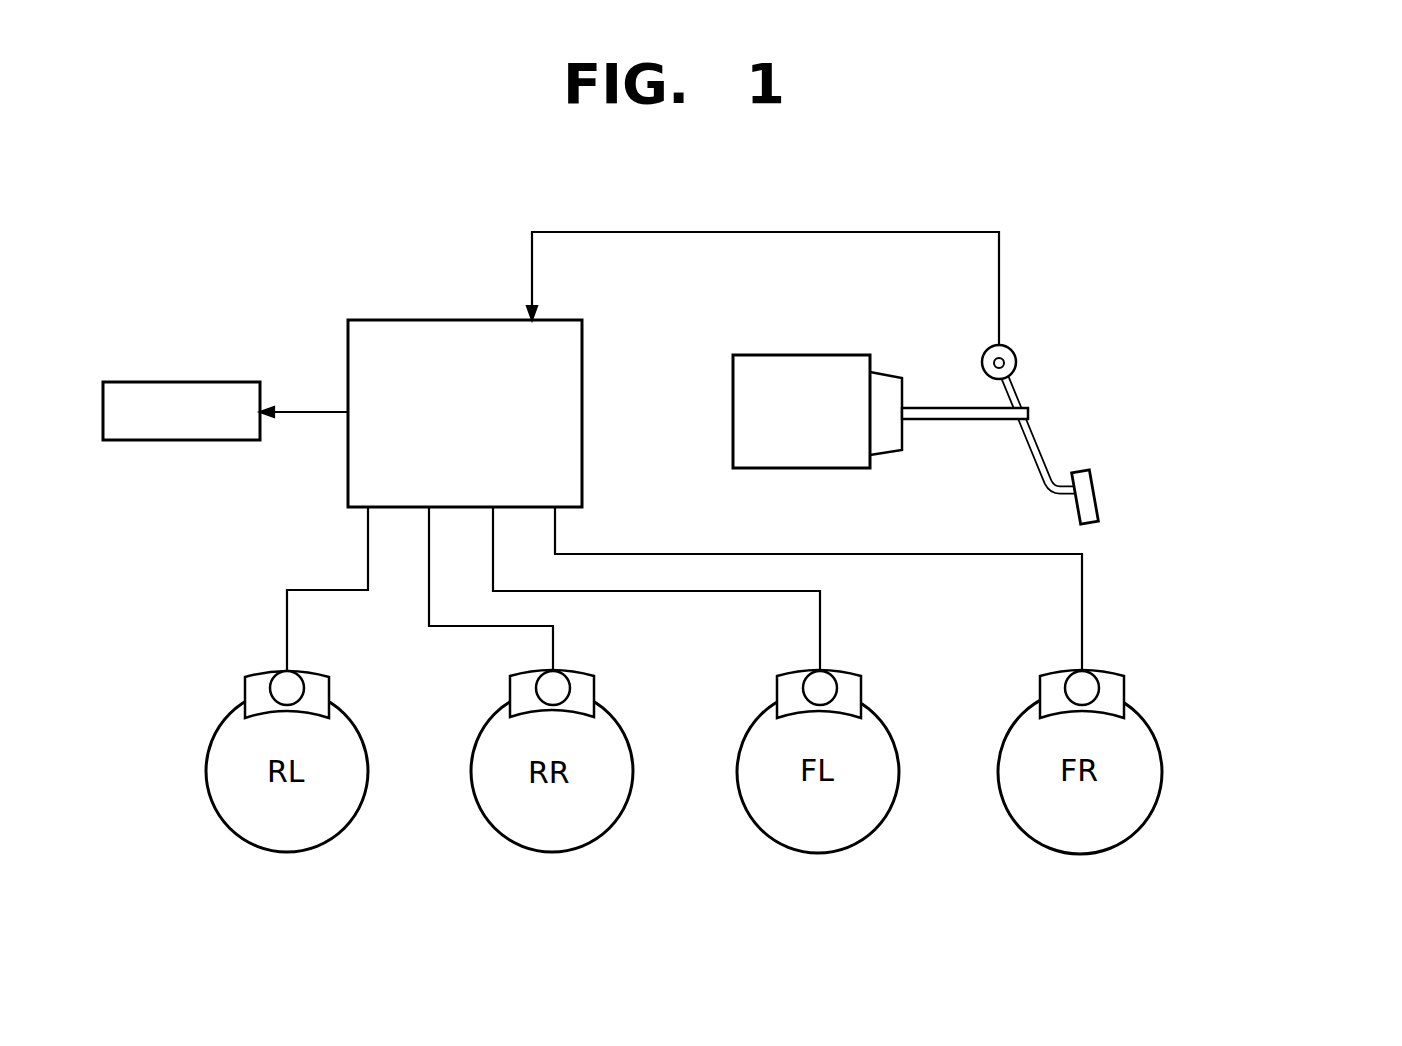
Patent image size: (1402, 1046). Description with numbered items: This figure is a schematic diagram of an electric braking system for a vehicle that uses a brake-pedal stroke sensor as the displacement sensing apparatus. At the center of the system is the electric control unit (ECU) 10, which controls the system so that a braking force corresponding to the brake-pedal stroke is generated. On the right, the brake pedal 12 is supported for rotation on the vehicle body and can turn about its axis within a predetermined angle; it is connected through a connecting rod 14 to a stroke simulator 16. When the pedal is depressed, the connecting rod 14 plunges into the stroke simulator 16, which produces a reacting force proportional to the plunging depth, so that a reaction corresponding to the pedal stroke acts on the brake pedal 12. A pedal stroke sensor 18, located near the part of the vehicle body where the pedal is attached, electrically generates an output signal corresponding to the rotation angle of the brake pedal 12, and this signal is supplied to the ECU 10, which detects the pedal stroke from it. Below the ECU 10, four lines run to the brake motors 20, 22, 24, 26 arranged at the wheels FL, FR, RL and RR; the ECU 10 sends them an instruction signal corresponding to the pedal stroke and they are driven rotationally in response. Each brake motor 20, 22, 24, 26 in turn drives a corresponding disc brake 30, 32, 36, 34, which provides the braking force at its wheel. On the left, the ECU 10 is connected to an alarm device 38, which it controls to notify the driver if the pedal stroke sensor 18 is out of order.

The electric control unit (ECU) 10 is at (568, 320).
The brake pedal 12 is at (1098, 495).
The connecting rod 14 is at (968, 421).
The stroke simulator 16 is at (840, 355).
The pedal stroke sensor 18 is at (1018, 358).
The brake motor 20 is at (836, 679).
The brake motor 22 is at (1097, 679).
The brake motor 24 is at (300, 675).
The brake motor 26 is at (567, 675).
The disc brake 30 is at (862, 690).
The disc brake 32 is at (1124, 691).
The disc brake 34 is at (595, 690).
The disc brake 36 is at (330, 689).
The alarm device 38 is at (231, 382).